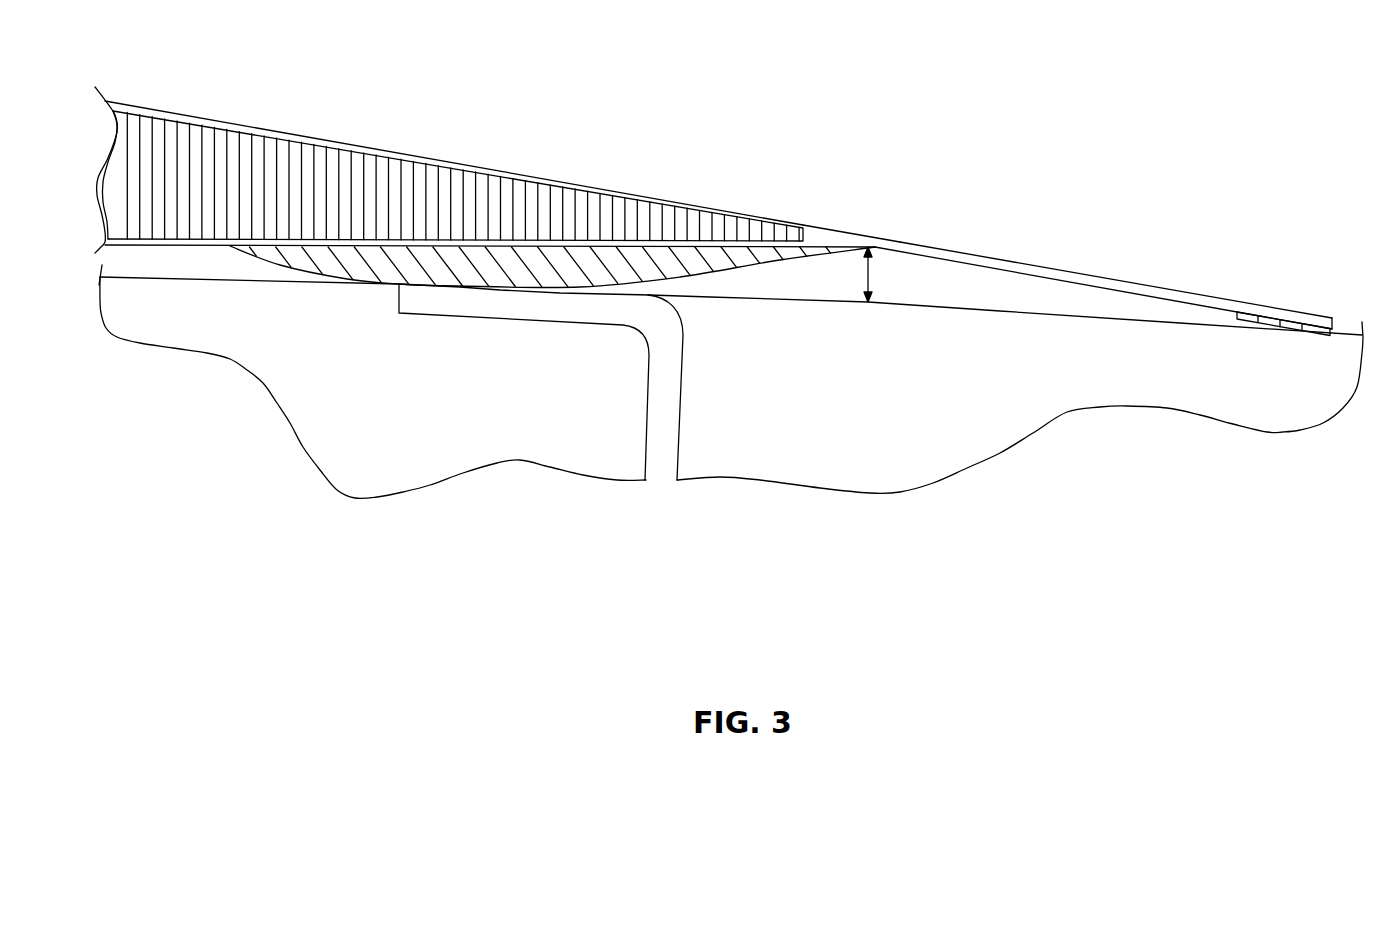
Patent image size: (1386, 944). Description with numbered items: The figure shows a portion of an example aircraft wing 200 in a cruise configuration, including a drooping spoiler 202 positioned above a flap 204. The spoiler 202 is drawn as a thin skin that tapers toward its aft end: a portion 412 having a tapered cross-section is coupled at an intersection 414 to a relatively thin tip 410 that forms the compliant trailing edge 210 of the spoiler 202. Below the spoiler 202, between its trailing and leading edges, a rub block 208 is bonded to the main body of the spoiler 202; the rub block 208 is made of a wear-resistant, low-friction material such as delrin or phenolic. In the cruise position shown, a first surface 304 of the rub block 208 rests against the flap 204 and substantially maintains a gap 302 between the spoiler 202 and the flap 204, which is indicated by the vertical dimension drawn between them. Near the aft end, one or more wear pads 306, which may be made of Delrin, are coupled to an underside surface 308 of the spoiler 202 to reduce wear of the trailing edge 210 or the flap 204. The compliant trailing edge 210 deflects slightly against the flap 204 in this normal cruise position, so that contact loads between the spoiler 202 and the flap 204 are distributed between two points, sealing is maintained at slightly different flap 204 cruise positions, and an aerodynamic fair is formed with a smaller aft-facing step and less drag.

The aircraft wing 200 is at (1139, 117).
The spoiler 202 is at (825, 235).
The flap 204 is at (1075, 400).
The rub block 208 is at (380, 283).
The trailing edge 210 is at (1332, 320).
The gap 302 is at (862, 275).
The first surface 304 is at (461, 287).
The wear pads 306 is at (1268, 312).
The underside surface 308 is at (988, 262).
The tip 410 is at (1125, 283).
The portion 412 is at (503, 170).
The intersection 414 is at (885, 243).